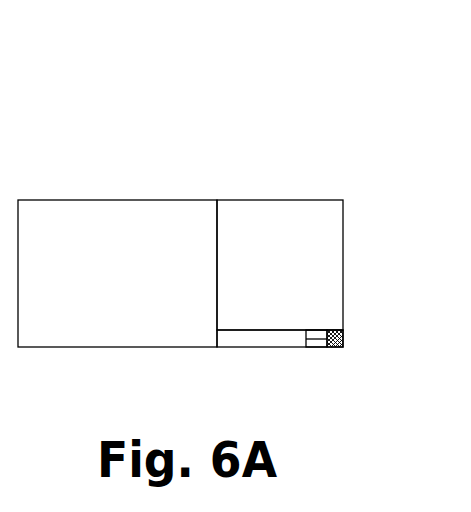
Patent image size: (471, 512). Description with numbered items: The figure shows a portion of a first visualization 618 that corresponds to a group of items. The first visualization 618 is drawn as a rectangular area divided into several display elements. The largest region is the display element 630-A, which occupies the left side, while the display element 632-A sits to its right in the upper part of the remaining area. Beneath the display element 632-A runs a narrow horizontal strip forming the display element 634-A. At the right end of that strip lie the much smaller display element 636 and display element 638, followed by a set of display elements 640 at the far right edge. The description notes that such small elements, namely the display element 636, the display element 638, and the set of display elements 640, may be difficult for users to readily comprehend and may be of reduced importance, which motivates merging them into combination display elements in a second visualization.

The portion of a first visualization 618 is at (212, 98).
The display element 630-A is at (117, 213).
The display element 632-A is at (285, 213).
The display element 634-A is at (250, 341).
The display element 636 is at (314, 336).
The display element 638 is at (316, 341).
The set of display elements 640 is at (345, 339).